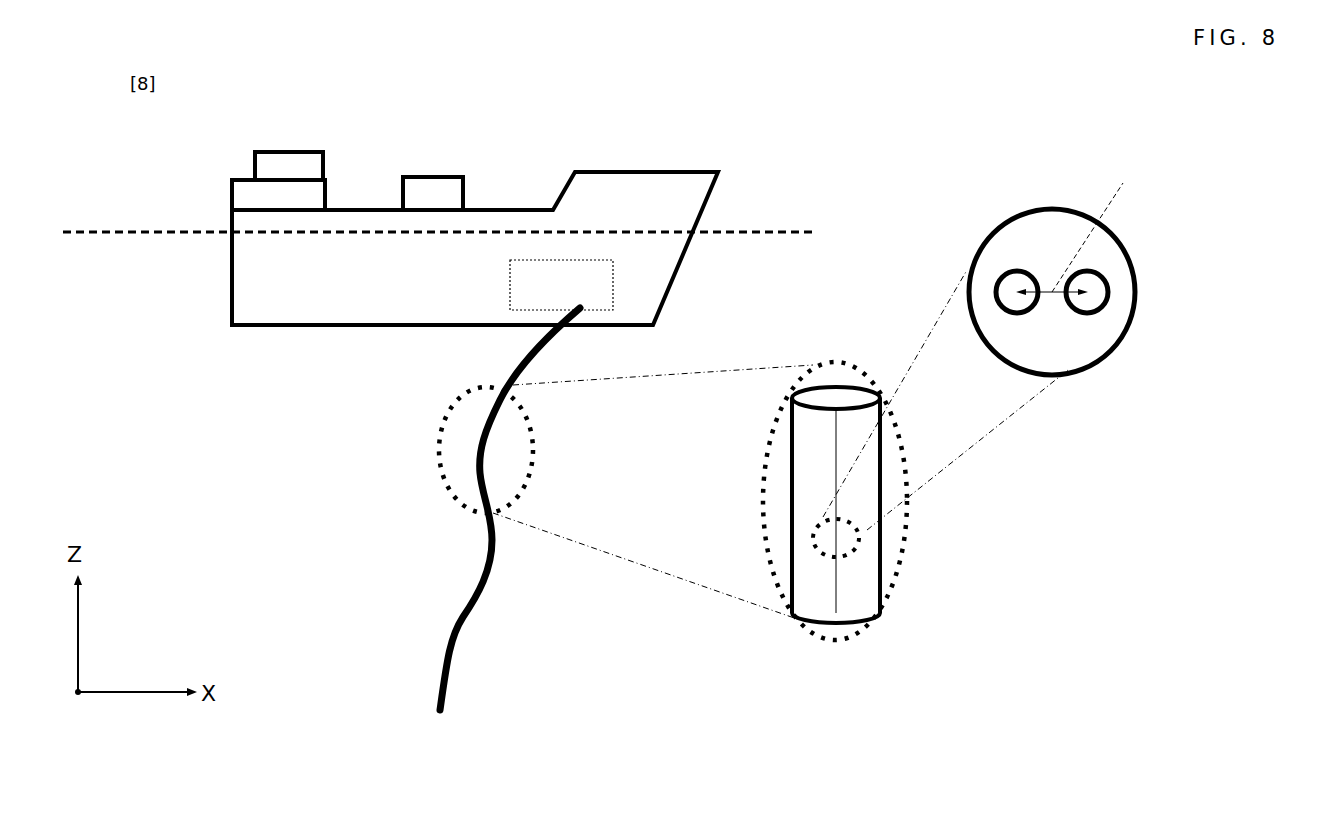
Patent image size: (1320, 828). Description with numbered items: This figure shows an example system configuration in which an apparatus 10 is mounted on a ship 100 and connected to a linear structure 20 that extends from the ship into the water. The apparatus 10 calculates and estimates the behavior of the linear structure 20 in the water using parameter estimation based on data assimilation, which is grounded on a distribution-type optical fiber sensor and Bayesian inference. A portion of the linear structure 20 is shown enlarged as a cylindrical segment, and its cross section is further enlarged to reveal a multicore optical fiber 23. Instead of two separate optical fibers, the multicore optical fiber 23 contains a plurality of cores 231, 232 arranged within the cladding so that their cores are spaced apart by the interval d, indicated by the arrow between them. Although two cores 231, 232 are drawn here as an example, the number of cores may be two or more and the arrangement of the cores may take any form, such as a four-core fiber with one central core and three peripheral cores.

The ship 100 is at (615, 172).
The apparatus 10 is at (509, 289).
The linear structure 20 is at (498, 547).
The multicore optical fiber 23 is at (838, 575).
The core 231 is at (1025, 313).
The core 232 is at (1102, 312).